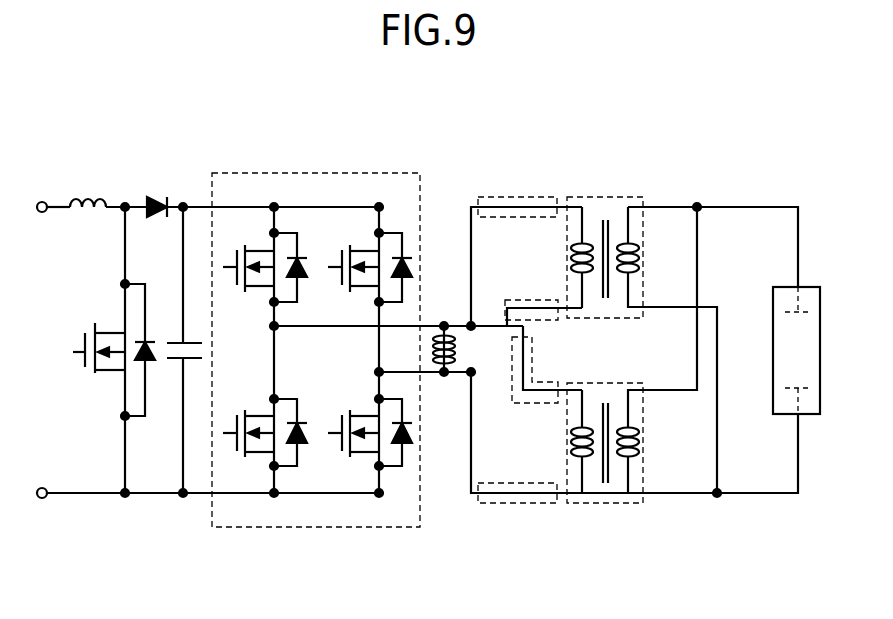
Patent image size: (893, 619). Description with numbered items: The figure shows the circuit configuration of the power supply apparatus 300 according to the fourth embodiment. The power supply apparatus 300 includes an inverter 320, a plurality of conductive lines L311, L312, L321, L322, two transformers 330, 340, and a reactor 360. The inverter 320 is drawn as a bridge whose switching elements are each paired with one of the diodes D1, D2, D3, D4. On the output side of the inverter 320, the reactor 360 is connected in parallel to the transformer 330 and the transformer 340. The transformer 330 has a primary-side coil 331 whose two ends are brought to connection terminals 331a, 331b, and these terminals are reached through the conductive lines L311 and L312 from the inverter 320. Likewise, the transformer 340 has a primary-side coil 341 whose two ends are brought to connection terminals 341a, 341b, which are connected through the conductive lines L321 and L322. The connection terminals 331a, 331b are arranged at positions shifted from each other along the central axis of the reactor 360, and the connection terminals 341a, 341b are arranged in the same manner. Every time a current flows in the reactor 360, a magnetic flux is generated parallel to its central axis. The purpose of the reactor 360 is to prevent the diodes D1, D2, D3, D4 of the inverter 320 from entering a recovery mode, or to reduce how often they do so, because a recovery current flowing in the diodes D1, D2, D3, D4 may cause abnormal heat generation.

The power supply apparatus 300 is at (118, 99).
The inverter 320 is at (252, 527).
The reactor 360 is at (454, 336).
The transformer 330 is at (618, 197).
The transformer 340 is at (625, 503).
The primary-side coil 331 is at (594, 274).
The primary-side coil 341 is at (590, 427).
The connection terminal 331a is at (560, 200).
The connection terminal 331b is at (563, 302).
The connection terminal 341a is at (561, 398).
The connection terminal 341b is at (560, 497).
The conductive line L311 is at (480, 197).
The conductive line L312 is at (527, 300).
The conductive line L321 is at (527, 404).
The conductive line L322 is at (505, 505).
The diode D1 is at (316, 274).
The diode D2 is at (415, 265).
The diode D3 is at (307, 430).
The diode D4 is at (414, 430).